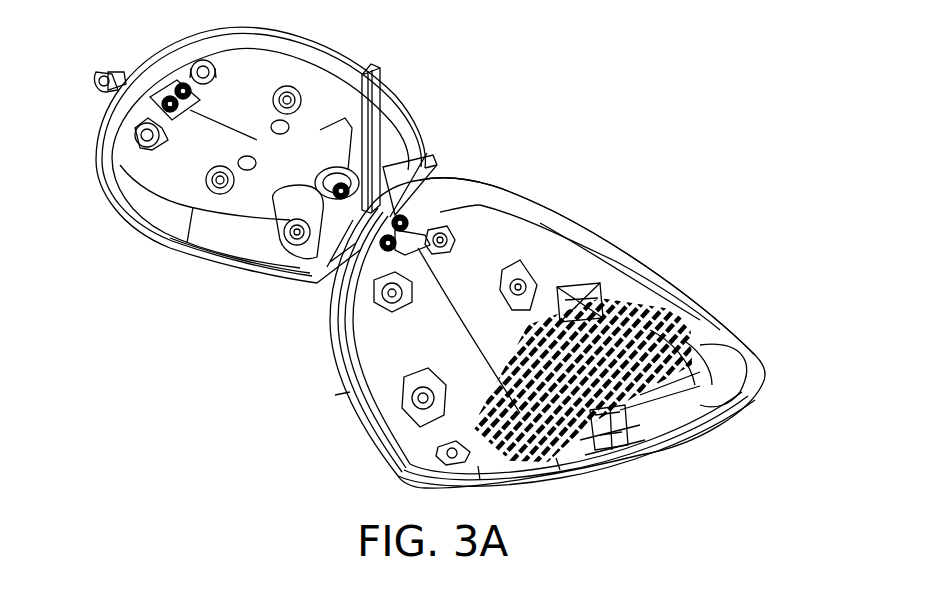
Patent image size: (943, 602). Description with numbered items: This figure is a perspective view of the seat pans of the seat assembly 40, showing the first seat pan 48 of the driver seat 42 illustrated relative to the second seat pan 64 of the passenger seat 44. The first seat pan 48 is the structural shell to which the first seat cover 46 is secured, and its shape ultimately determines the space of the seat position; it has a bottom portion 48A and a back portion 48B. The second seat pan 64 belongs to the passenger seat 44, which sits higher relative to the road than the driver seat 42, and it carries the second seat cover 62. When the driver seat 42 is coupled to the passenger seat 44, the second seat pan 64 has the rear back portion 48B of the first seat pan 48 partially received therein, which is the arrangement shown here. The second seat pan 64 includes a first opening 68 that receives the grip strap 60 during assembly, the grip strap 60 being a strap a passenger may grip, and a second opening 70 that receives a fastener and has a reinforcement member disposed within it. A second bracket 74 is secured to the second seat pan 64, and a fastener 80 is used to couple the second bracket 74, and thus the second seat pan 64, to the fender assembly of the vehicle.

The seat assembly 40 is at (555, 87).
The driver seat 42 is at (761, 282).
The passenger seat 44 is at (252, 370).
The first seat cover 46 is at (537, 205).
The first seat pan 48 is at (633, 443).
The bottom portion 48A is at (627, 310).
The back portion 48B is at (347, 405).
The grip strap 60 is at (377, 90).
The second seat cover 62 is at (270, 33).
The second seat pan 64 is at (193, 207).
The first opening 68 is at (407, 165).
The second opening 70 is at (340, 177).
The second bracket 74 is at (120, 80).
The fastener 80 is at (102, 78).